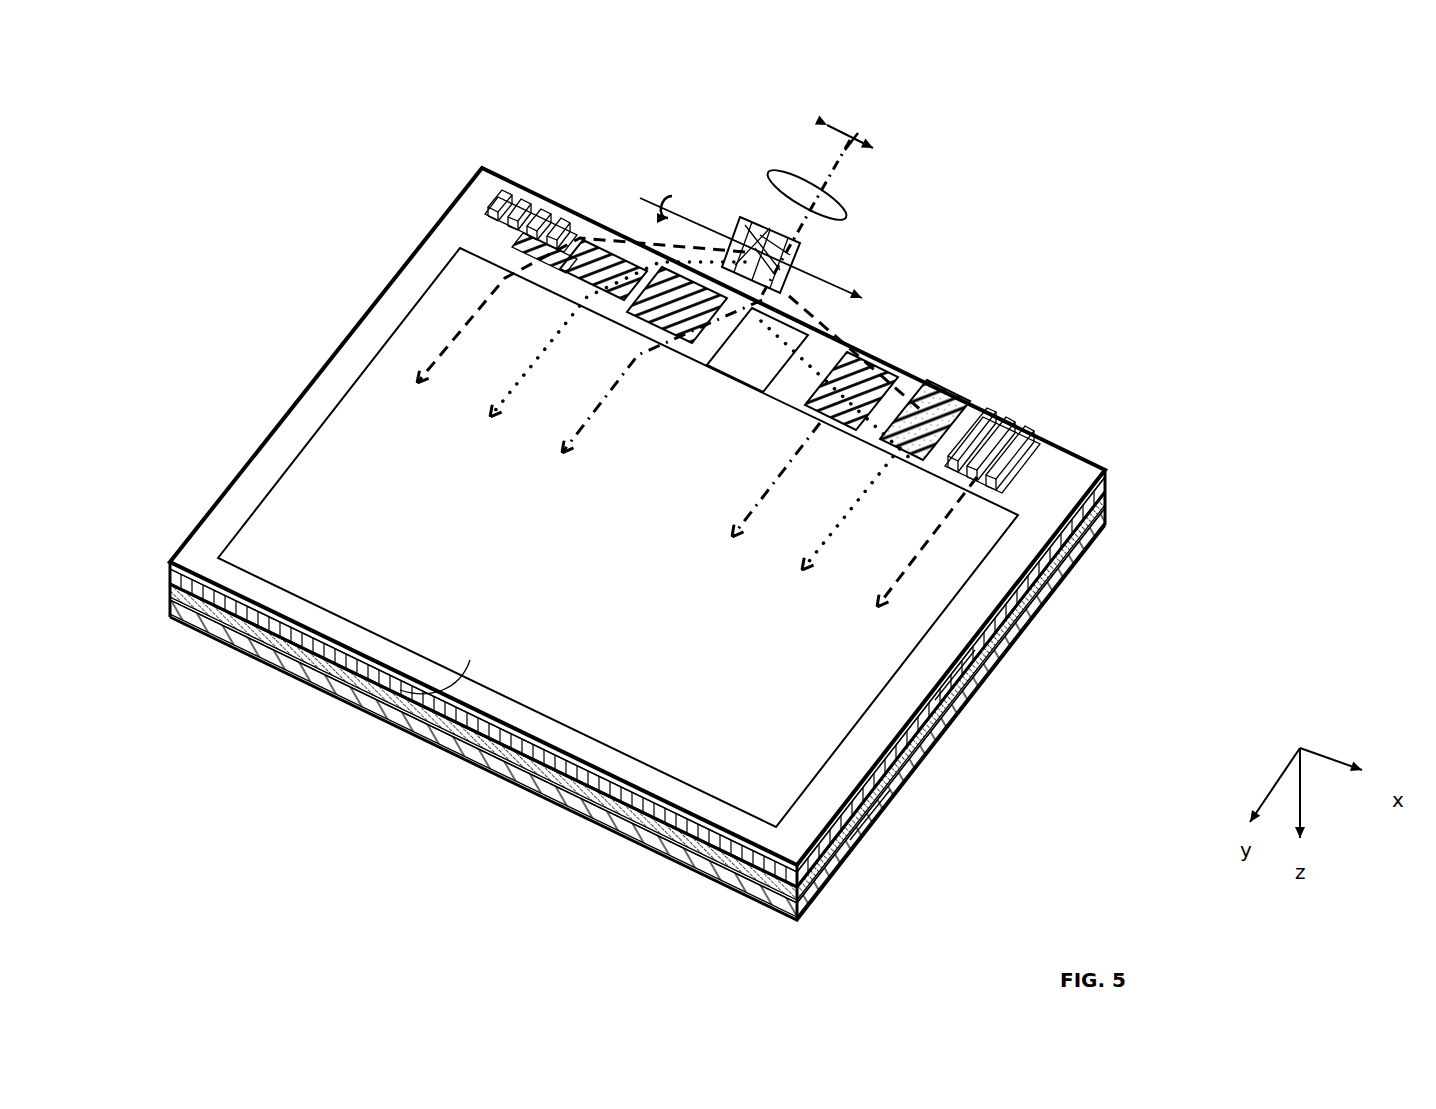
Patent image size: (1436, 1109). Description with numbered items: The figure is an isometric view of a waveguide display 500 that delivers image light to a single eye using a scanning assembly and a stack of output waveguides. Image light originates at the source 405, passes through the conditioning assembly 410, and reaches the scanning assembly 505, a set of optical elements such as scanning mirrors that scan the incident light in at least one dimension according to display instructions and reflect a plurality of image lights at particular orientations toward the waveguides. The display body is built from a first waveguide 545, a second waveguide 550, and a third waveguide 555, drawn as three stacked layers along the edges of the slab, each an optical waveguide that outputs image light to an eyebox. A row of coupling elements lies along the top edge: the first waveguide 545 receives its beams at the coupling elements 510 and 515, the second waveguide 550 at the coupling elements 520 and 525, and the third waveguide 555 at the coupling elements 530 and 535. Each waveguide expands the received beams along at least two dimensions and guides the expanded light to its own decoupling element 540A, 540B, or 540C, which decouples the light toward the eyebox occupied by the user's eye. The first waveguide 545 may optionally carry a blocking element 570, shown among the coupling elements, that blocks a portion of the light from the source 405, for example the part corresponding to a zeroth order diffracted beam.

The waveguide display 500 is at (216, 86).
The source 405 is at (882, 140).
The conditioning assembly 410 is at (848, 205).
The scanning assembly 505 is at (800, 245).
The coupling element 510 is at (870, 387).
The coupling element 515 is at (650, 300).
The coupling element 520 is at (945, 440).
The coupling element 525 is at (600, 282).
The coupling element 530 is at (990, 450).
The coupling element 535 is at (505, 238).
The decoupling element 540A is at (445, 682).
The decoupling element 540B is at (958, 690).
The decoupling element 540C is at (872, 832).
The first waveguide 545 is at (495, 765).
The second waveguide 550 is at (545, 790).
The third waveguide 555 is at (665, 850).
The blocking element 570 is at (770, 352).